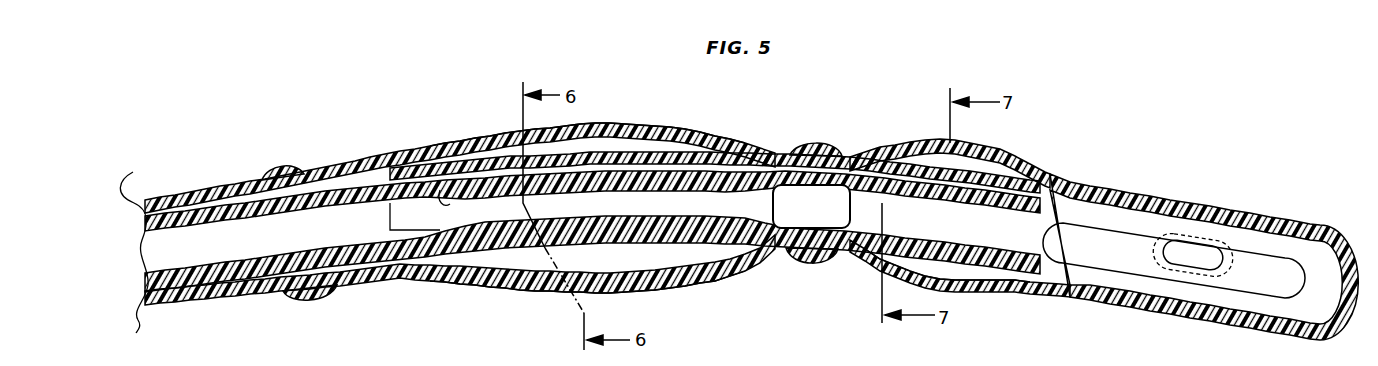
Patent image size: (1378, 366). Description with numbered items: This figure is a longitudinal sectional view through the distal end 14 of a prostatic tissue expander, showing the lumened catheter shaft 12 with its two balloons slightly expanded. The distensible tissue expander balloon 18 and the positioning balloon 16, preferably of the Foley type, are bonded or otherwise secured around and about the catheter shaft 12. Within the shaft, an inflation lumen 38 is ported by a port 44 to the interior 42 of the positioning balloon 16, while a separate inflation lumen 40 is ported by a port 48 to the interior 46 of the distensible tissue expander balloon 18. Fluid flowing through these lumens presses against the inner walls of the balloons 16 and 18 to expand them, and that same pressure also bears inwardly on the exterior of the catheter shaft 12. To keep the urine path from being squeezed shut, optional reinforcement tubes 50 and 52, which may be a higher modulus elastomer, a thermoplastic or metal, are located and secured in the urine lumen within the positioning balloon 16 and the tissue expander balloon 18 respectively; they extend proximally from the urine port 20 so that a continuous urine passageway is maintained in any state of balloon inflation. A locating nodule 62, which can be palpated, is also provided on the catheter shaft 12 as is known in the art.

The lumened catheter shaft 12 is at (240, 180).
The distal end 14 is at (1296, 325).
The positioning balloon 16 is at (1017, 291).
The distensible tissue expander balloon 18 is at (692, 281).
The urine port 20 is at (1192, 253).
The inflation lumen 38 is at (133, 180).
The inflation lumen 40 is at (145, 312).
The interior of the positioning balloon 42 is at (1023, 170).
The port 44 is at (1000, 146).
The interior of the distensible tissue expander balloon 46 is at (600, 144).
The port 48 is at (546, 262).
The reinforcement tube 50 is at (1036, 192).
The reinforcement tube 52 is at (446, 200).
The locating nodule 62 is at (300, 294).